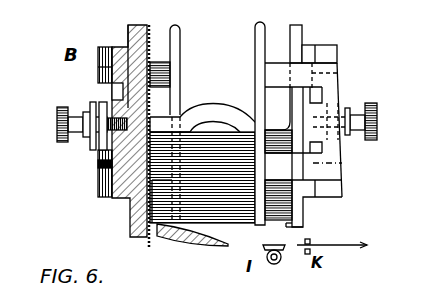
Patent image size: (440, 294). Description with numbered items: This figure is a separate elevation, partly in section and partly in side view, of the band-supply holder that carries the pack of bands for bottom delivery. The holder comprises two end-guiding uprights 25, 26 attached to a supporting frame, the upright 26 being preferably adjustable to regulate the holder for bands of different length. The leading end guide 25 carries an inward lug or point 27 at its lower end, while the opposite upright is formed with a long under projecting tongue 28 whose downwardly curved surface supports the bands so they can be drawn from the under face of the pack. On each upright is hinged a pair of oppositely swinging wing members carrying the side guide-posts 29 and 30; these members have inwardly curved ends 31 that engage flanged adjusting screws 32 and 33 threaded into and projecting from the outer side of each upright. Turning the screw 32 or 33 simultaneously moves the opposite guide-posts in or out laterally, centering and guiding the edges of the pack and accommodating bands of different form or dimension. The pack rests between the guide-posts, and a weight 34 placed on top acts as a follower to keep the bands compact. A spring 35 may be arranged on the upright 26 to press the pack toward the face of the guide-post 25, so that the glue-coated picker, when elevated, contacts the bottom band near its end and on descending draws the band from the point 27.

The leading end guide 25 is at (300, 203).
The end-guiding upright 26 is at (137, 208).
The inward lug or point 27 is at (290, 243).
The under projecting tongue 28 is at (197, 238).
The side guide-post 29 is at (181, 68).
The side guide-post 30 is at (256, 77).
The inwardly curved ends 31 is at (97, 113).
The flanged adjusting screw 32 is at (378, 124).
The flanged adjusting screw 33 is at (57, 124).
The weight 34 is at (213, 113).
The spring 35 is at (150, 240).